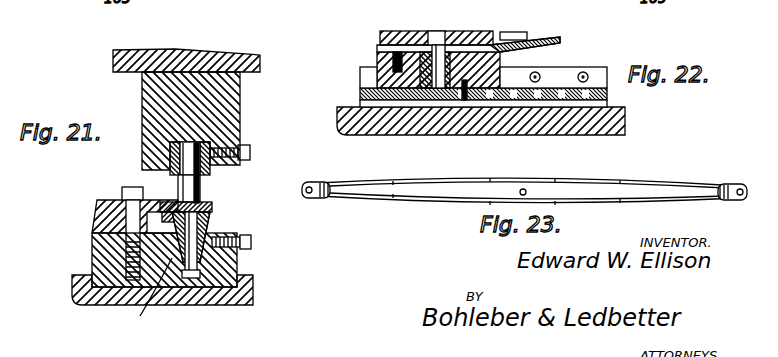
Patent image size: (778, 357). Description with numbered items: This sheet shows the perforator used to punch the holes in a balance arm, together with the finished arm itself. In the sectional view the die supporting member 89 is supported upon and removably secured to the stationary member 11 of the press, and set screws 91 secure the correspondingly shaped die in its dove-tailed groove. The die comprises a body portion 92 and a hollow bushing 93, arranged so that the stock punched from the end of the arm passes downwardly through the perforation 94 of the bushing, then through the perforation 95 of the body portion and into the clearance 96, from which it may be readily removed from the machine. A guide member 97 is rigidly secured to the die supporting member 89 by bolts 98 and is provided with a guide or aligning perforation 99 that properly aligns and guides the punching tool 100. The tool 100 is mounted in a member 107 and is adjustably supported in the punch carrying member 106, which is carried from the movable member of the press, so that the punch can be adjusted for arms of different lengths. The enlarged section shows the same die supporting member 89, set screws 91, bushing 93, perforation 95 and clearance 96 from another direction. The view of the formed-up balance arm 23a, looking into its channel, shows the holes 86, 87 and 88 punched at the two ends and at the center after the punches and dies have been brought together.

In FIG. 21, the stationary member 11 is at (226, 297).
In FIG. 21, the die supporting member 89 is at (238, 262).
In FIG. 21, the set screws 91 is at (252, 241).
In FIG. 22, the set screws 91 is at (376, 62).
In FIG. 21, the body portion 92 is at (222, 235).
In FIG. 21, the hollow bushing 93 is at (207, 207).
In FIG. 22, the hollow bushing 93 is at (424, 92).
In FIG. 21, the perforation of the bushing 94 is at (147, 297).
In FIG. 21, the perforation of the body portion 95 is at (190, 264).
In FIG. 22, the perforation of the body portion 95 is at (443, 96).
In FIG. 21, the clearance 96 is at (196, 278).
In FIG. 22, the clearance 96 is at (368, 103).
In FIG. 21, the guide member 97 is at (96, 215).
In FIG. 22, the guide member 97 is at (412, 32).
In FIG. 21, the bolts 98 is at (125, 188).
In FIG. 21, the guide or aligning perforation 99 is at (252, 168).
In FIG. 22, the guide or aligning perforation 99 is at (440, 30).
In FIG. 21, the punching tool 100 is at (237, 153).
In FIG. 21, the punch carrying member 106 is at (238, 103).
In FIG. 21, the member 107 is at (214, 144).
In FIG. 23, the hole 86 is at (312, 186).
In FIG. 23, the hole 87 is at (526, 190).
In FIG. 23, the hole 88 is at (748, 178).
In FIG. 23, the link 23a is at (626, 176).